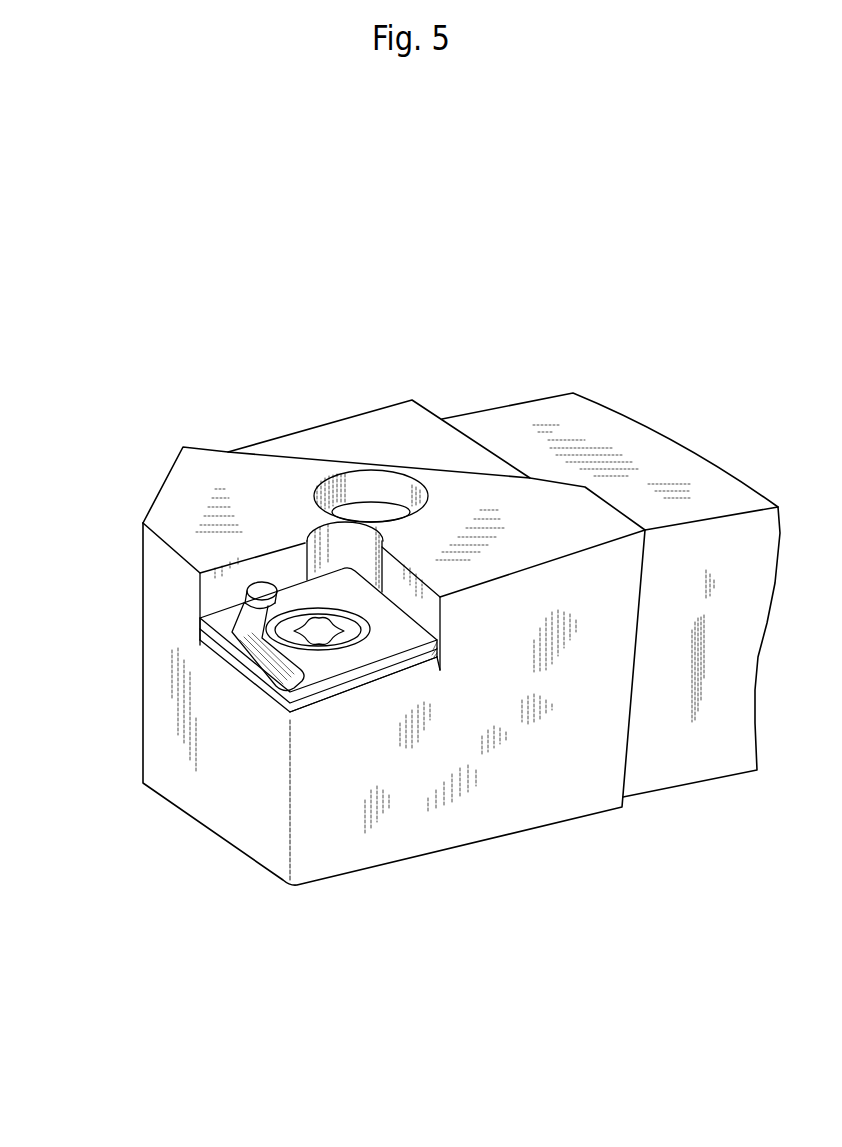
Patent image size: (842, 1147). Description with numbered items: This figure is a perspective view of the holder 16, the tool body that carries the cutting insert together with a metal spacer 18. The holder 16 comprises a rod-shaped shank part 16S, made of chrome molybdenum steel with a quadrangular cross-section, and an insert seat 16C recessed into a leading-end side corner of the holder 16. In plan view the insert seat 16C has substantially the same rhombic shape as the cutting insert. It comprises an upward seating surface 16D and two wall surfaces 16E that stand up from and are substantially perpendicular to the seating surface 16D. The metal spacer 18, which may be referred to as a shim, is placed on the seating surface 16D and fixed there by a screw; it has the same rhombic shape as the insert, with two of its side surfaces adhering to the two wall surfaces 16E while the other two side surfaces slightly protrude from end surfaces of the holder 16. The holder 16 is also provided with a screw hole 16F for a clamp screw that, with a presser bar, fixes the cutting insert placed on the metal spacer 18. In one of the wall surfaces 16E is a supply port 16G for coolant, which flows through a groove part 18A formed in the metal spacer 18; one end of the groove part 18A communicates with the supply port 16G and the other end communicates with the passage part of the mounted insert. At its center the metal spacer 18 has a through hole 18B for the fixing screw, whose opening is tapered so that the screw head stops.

The holder 16 is at (571, 826).
The insert seat 16C is at (222, 603).
The seating surface 16D is at (373, 683).
The wall surfaces 16E is at (200, 596).
The screw hole 16F is at (373, 490).
The supply port 16G is at (273, 583).
The shank part 16S is at (595, 447).
The metal spacer 18 is at (297, 660).
The groove part 18A is at (233, 660).
The through hole 18B is at (350, 645).